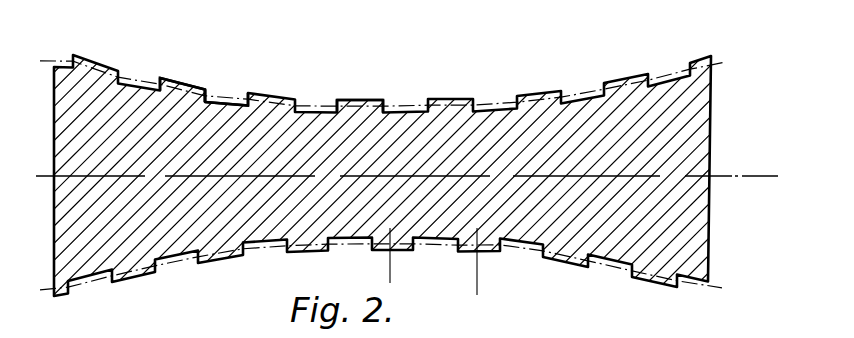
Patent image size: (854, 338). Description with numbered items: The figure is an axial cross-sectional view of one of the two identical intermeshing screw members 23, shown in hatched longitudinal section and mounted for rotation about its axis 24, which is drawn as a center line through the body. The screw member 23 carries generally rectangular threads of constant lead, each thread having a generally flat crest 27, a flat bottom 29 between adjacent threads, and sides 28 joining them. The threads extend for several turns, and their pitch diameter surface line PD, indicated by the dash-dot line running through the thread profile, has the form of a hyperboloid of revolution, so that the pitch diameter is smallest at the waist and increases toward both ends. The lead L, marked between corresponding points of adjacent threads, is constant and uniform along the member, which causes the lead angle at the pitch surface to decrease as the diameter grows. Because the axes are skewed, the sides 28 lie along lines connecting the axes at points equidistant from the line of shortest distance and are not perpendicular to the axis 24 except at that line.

The screw member 23 is at (357, 100).
The axis 24 is at (722, 175).
The crest 27 is at (171, 79).
The side 28 is at (210, 92).
The bottom 29 is at (231, 97).
The pitch diameter surface line PD is at (491, 103).
The lead L is at (477, 270).